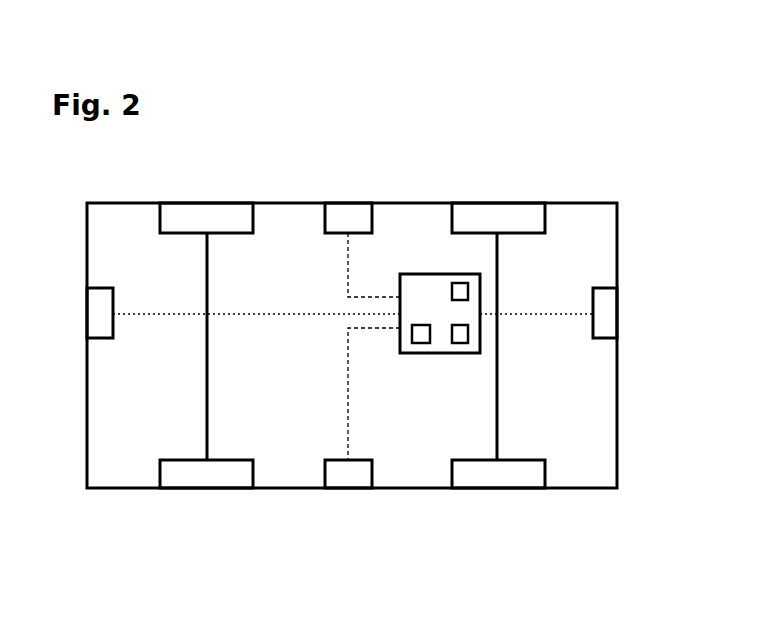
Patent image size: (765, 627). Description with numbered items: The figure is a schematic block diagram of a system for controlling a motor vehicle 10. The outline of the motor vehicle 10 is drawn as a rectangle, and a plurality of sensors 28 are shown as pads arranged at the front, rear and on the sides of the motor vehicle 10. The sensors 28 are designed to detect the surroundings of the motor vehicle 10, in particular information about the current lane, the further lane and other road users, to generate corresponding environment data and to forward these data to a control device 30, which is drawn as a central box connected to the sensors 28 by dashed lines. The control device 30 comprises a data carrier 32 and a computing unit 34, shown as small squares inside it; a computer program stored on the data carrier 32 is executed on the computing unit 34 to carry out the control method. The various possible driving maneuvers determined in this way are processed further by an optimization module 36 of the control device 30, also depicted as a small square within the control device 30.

The motor vehicle 10 is at (566, 204).
The sensors 28 is at (348, 218).
The control device 30 is at (440, 274).
The data carrier 32 is at (421, 352).
The computing unit 34 is at (460, 352).
The optimization module 36 is at (460, 285).